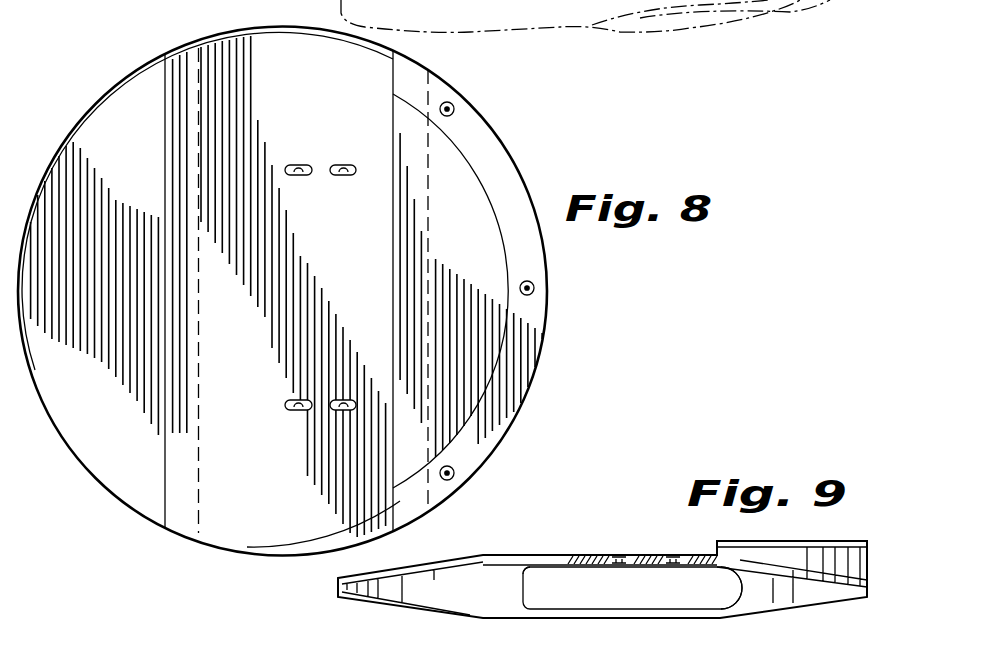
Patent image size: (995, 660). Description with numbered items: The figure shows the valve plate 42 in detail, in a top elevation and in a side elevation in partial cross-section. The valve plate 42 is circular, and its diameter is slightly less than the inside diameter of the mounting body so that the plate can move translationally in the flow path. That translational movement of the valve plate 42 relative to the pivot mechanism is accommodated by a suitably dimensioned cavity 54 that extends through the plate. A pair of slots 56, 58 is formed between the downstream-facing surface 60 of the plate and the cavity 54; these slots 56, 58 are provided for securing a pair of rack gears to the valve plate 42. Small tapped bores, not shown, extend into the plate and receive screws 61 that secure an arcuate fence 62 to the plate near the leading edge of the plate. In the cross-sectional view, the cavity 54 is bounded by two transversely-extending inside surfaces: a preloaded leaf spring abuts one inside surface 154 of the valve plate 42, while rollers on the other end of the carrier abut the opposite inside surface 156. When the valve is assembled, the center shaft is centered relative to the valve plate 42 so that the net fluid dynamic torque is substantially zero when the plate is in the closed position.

In FIG. 8, the valve plate 42 is at (150, 532).
In FIG. 9, the valve plate 42 is at (330, 594).
In FIG. 9, the cavity 54 is at (650, 600).
In FIG. 8, the slot 56 is at (341, 165).
In FIG. 9, the slot 56 is at (673, 554).
In FIG. 8, the slot 58 is at (339, 411).
In FIG. 8, the downstream-facing surface 60 is at (371, 260).
In FIG. 8, the screws 61 is at (533, 287).
In FIG. 8, the arcuate fence 62 is at (490, 150).
In FIG. 9, the arcuate fence 62 is at (780, 524).
In FIG. 9, the inside surface 154 is at (742, 580).
In FIG. 9, the inside surface 156 is at (530, 578).